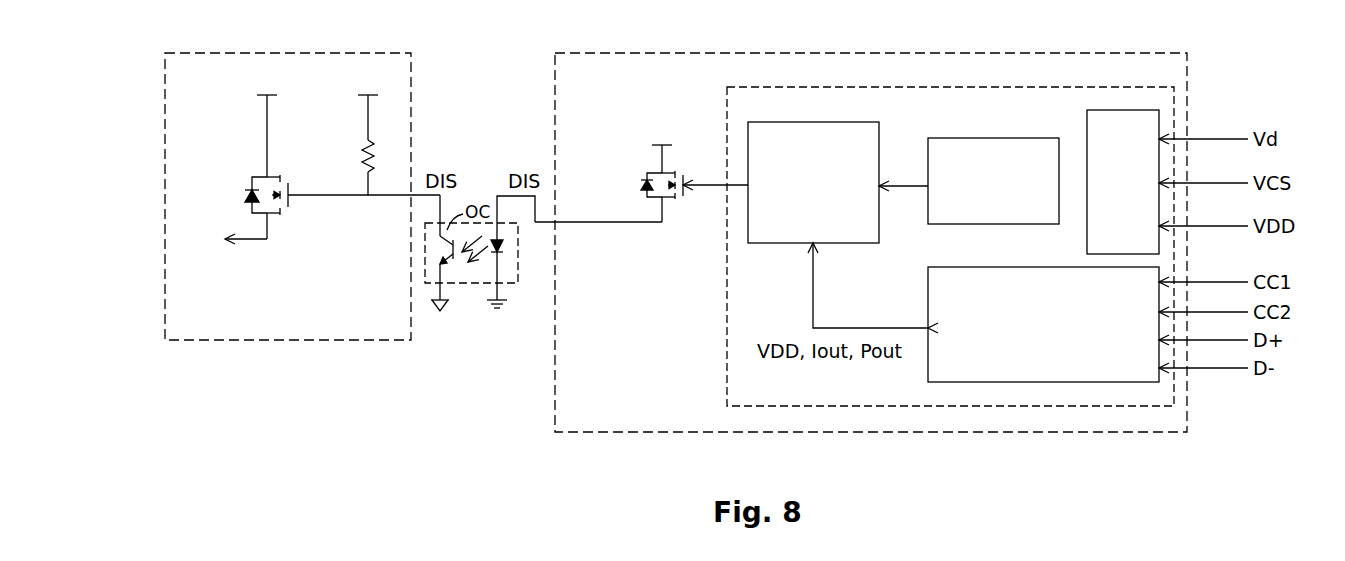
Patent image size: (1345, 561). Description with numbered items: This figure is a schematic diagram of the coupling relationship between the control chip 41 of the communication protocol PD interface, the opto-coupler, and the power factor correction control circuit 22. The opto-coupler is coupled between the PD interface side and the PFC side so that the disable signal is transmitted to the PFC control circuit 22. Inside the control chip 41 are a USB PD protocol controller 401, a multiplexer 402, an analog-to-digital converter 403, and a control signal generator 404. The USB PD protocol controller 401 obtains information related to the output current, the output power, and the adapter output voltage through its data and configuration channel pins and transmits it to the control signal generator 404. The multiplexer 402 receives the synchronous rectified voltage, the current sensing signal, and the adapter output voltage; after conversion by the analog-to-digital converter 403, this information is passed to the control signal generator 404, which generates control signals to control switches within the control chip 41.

The power factor correction control circuit 22 is at (400, 335).
The control chip of the communication protocol PD interface 41 is at (761, 398).
The USB PD protocol controller 401 is at (969, 374).
The multiplexer 402 is at (1122, 247).
The analog-to-digital converter 403 is at (962, 216).
The control signal generator 404 is at (784, 236).